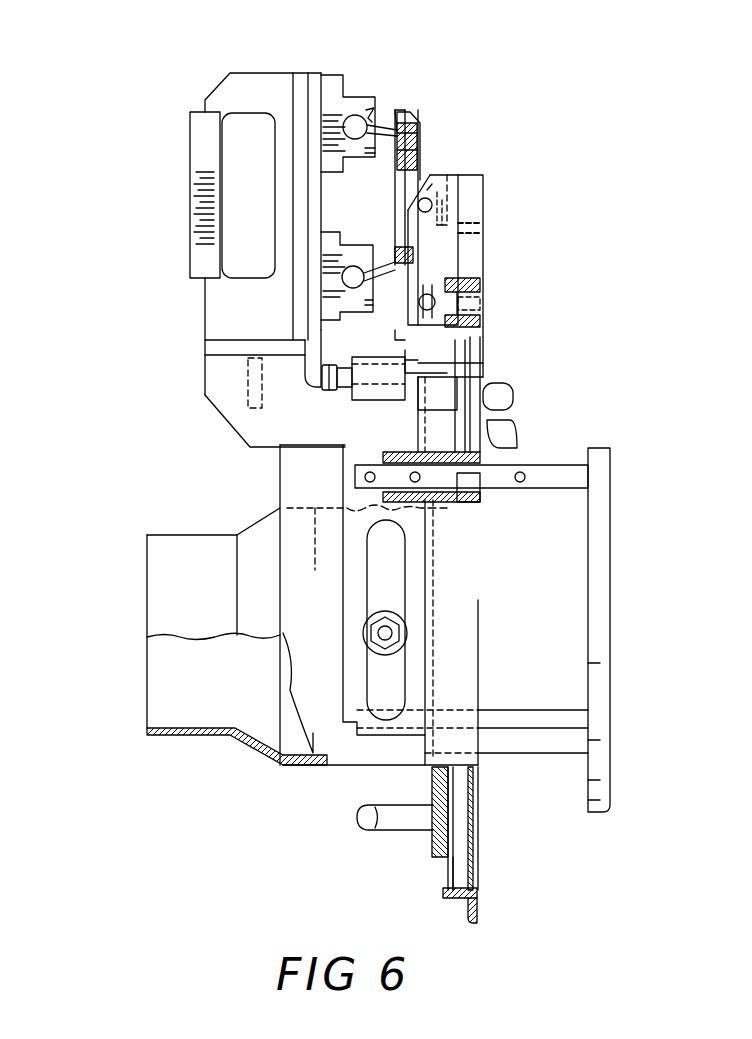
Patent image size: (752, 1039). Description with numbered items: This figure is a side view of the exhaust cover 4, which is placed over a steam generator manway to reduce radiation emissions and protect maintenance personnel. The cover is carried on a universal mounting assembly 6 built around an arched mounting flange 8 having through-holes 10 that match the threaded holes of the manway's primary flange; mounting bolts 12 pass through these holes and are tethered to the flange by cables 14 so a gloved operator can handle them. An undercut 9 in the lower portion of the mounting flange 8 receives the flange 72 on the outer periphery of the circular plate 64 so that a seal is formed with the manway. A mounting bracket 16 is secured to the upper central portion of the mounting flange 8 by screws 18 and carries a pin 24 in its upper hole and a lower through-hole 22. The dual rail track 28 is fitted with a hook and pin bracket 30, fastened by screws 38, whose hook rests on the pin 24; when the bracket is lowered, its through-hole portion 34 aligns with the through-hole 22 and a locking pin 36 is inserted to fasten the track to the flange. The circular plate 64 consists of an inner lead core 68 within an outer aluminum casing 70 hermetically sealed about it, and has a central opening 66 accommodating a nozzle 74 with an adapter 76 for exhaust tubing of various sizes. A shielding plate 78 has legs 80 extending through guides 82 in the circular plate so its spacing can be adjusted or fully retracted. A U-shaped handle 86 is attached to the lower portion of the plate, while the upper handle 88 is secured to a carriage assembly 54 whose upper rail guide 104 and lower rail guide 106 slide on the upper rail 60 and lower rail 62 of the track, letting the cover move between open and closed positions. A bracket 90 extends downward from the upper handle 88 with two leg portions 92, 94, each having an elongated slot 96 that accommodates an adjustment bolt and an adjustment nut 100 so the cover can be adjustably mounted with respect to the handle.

The exhaust cover 4 is at (140, 555).
The universal mounting assembly 6 is at (493, 240).
The mounting flange 8 is at (470, 178).
The undercut 9 is at (430, 357).
The through-holes 10 is at (450, 380).
The mounting bolts 12 is at (462, 370).
The cables 14 is at (405, 350).
The mounting bracket 16 is at (433, 195).
The screws 18 is at (480, 228).
The through-hole 22 is at (395, 313).
The pin 24 is at (430, 218).
The dual rail track 28 is at (405, 108).
The hook and pin bracket 30 is at (440, 170).
The through-hole portion 34 is at (445, 285).
The locking pin 36 is at (447, 325).
The screws 38 is at (422, 130).
The carriage assembly 54 is at (318, 72).
The upper rail 60 is at (373, 122).
The lower rail 62 is at (355, 277).
The circular plate 64 is at (445, 870).
The central opening 66 is at (420, 768).
The inner lead core 68 is at (465, 873).
The outer aluminum casing 70 is at (455, 838).
The flange 72 is at (477, 905).
The nozzle 74 is at (300, 767).
The adapter 76 is at (195, 740).
The shielding plate 78 is at (610, 700).
The legs 80 is at (540, 462).
The guides 82 is at (383, 452).
The handle 86 is at (360, 830).
The upper handle 88 is at (195, 205).
The bracket 90 is at (233, 435).
The leg portion 92 is at (345, 480).
The leg portion 94 is at (356, 493).
The elongated slot 96 is at (370, 685).
The adjustment nut 100 is at (395, 630).
The upper rail guide 104 is at (348, 95).
The lower rail guide 106 is at (322, 385).